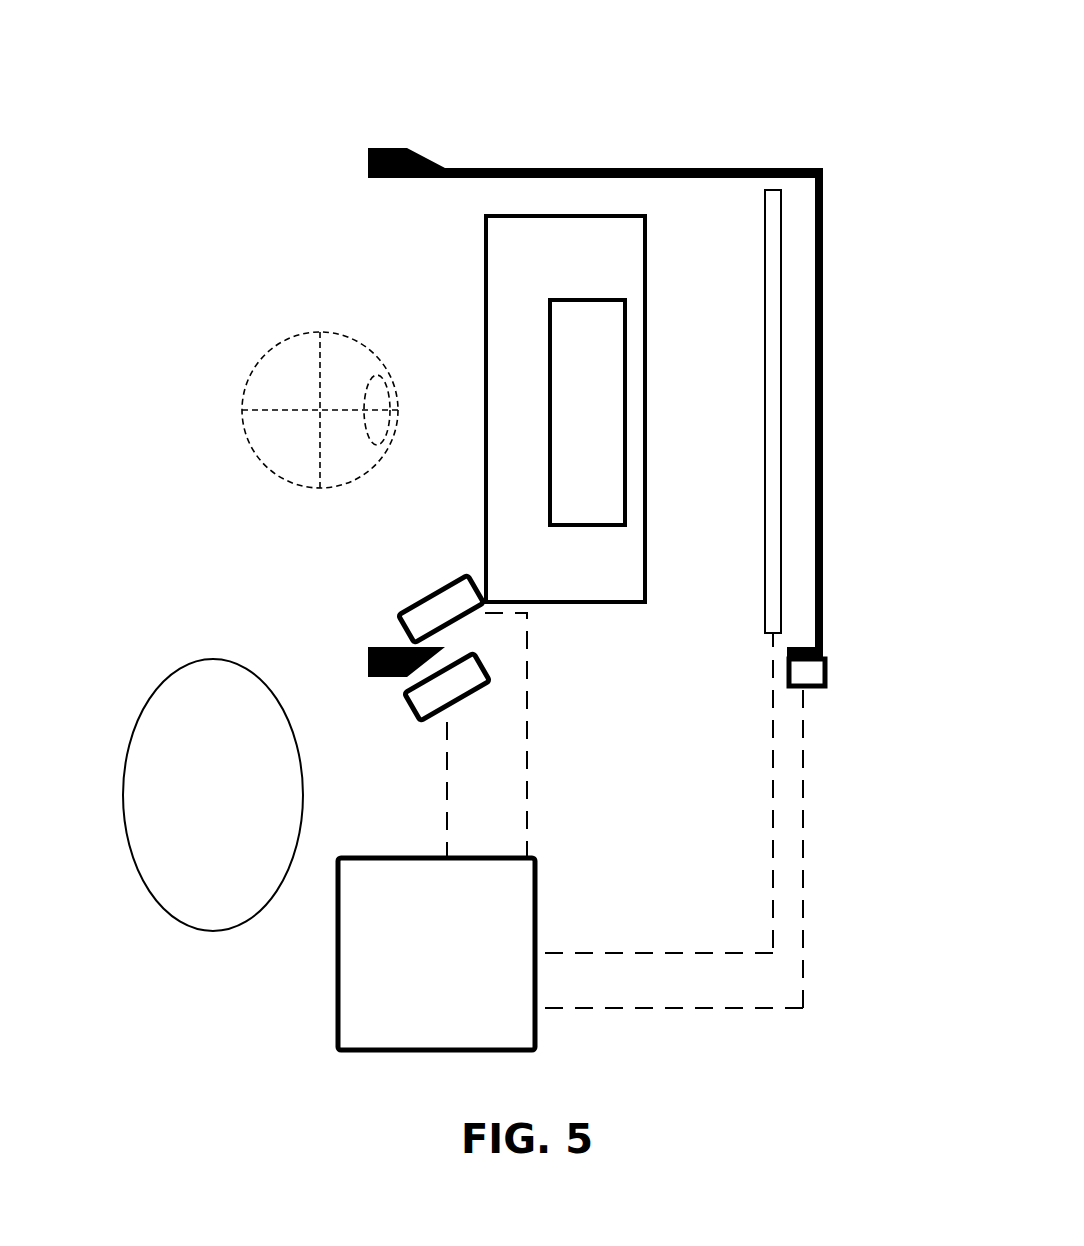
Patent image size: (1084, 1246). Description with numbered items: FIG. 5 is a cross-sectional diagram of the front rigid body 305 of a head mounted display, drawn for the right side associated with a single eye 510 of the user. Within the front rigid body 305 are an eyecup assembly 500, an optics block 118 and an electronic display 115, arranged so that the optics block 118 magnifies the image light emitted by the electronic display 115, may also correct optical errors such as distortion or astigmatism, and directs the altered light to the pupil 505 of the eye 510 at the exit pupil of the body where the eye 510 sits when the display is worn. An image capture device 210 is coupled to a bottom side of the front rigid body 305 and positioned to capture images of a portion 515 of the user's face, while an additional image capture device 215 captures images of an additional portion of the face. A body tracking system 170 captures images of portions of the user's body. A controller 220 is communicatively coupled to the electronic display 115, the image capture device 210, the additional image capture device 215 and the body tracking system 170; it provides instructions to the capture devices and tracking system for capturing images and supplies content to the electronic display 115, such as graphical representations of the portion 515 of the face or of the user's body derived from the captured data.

The front rigid body 305 is at (672, 166).
The eyecup assembly 500 is at (550, 252).
The optics block 118 is at (593, 340).
The electronic display 115 is at (775, 200).
The body tracking system 170 is at (830, 688).
The additional image capture device 215 is at (425, 592).
The image capture device 210 is at (463, 704).
The controller 220 is at (436, 954).
The eye 510 is at (280, 343).
The pupil 505 is at (365, 393).
The portion of the user's face 515 is at (122, 797).